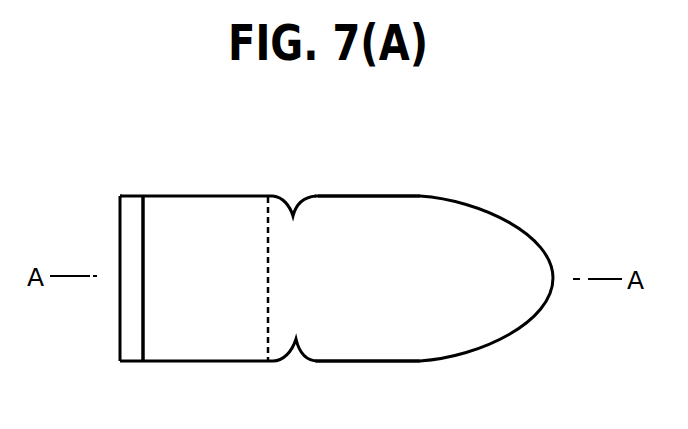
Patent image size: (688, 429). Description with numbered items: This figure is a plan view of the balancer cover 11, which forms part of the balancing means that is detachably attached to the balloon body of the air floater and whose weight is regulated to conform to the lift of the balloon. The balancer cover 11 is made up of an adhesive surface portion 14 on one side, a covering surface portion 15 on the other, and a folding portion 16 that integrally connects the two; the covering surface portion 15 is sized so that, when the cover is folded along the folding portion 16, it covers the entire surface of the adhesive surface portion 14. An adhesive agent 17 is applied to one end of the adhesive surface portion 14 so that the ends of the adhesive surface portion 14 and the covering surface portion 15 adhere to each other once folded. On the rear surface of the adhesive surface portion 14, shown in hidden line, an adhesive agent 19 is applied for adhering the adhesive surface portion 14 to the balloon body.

The balancer cover 11 is at (408, 194).
The adhesive surface portion 14 is at (173, 196).
The covering surface portion 15 is at (365, 205).
The folding portion 16 is at (293, 215).
The adhesive agent 17 is at (142, 220).
The adhesive agent 19 is at (265, 232).